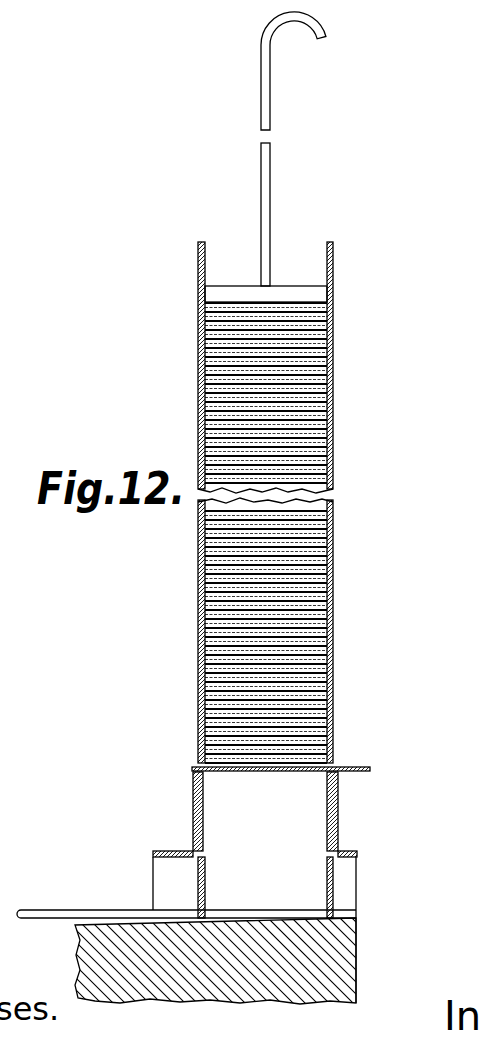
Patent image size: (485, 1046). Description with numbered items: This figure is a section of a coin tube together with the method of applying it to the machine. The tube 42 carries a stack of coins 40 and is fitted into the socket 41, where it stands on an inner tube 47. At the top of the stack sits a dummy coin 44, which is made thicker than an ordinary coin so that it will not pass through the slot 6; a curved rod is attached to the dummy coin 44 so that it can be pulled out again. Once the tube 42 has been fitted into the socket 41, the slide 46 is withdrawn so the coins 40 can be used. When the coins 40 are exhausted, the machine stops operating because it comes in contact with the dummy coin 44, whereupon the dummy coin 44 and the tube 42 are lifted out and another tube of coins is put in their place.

The slot 6 is at (356, 912).
The coins 40 is at (300, 340).
The socket 41 is at (340, 791).
The tube 42 is at (334, 414).
The dummy coin 44 is at (292, 293).
The slide 46 is at (340, 767).
The inner tube 47 is at (338, 838).